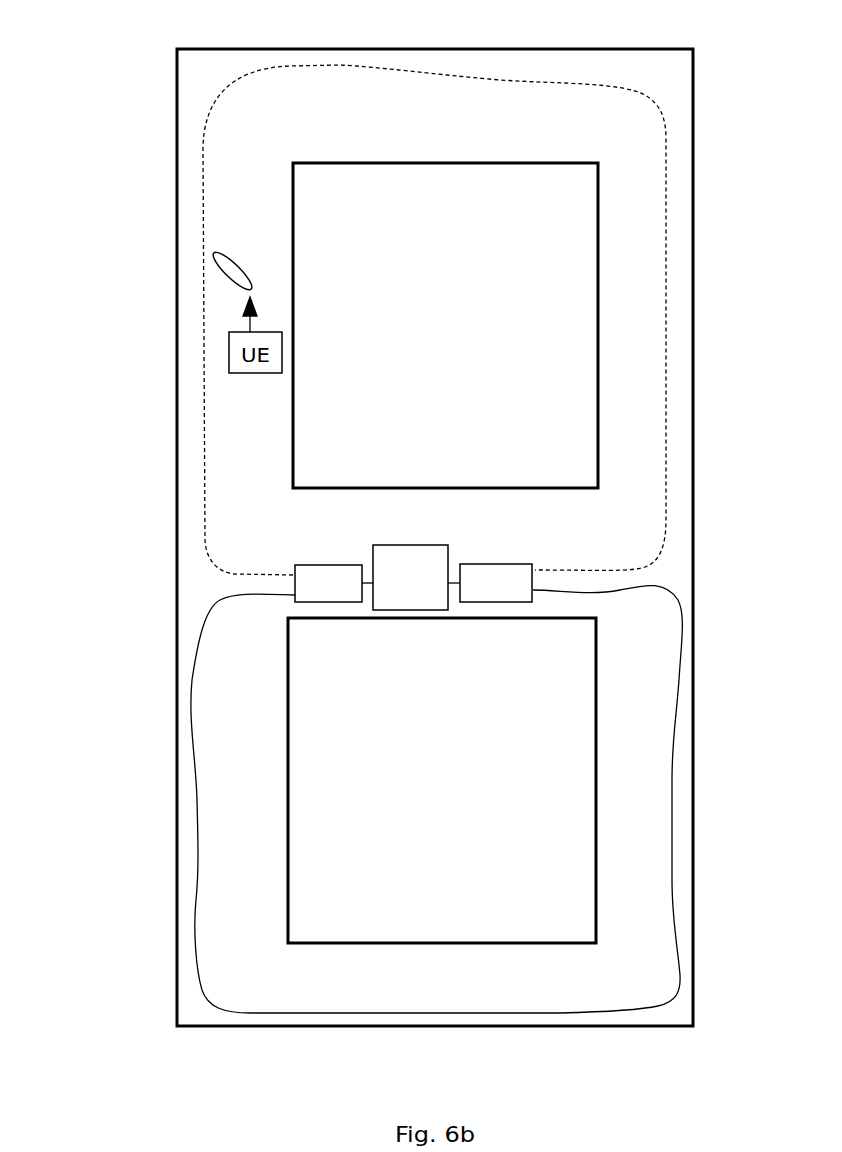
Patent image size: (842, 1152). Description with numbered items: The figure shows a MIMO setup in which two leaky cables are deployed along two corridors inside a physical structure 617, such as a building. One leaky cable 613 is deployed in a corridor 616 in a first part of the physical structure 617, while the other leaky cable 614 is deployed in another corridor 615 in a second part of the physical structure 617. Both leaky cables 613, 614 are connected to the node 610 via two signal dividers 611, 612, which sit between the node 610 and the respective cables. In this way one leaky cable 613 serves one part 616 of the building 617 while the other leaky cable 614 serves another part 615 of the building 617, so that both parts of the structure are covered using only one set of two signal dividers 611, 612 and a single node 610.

The node 610 is at (430, 603).
The signal divider 611 is at (350, 597).
The signal divider 612 is at (517, 597).
The leaky cable 613 is at (198, 178).
The leaky cable 614 is at (190, 752).
The corridor 615 is at (188, 892).
The corridor 616 is at (198, 78).
The physical structure 617 is at (567, 49).